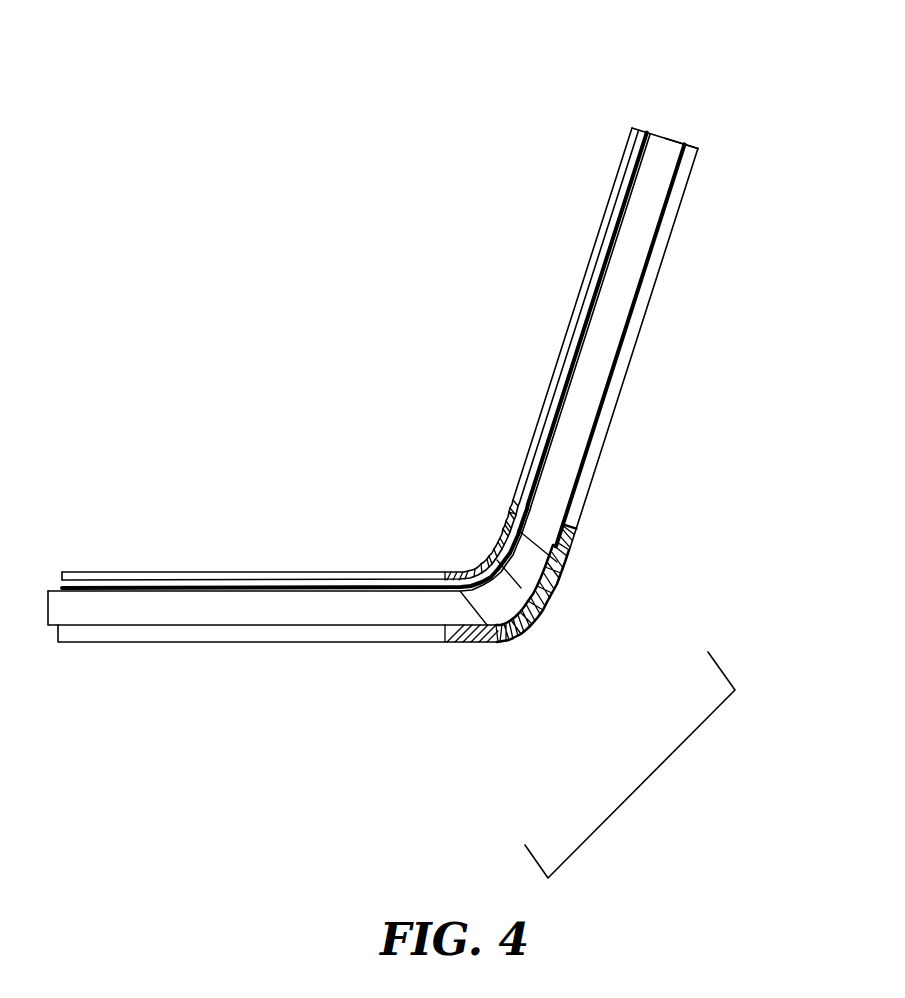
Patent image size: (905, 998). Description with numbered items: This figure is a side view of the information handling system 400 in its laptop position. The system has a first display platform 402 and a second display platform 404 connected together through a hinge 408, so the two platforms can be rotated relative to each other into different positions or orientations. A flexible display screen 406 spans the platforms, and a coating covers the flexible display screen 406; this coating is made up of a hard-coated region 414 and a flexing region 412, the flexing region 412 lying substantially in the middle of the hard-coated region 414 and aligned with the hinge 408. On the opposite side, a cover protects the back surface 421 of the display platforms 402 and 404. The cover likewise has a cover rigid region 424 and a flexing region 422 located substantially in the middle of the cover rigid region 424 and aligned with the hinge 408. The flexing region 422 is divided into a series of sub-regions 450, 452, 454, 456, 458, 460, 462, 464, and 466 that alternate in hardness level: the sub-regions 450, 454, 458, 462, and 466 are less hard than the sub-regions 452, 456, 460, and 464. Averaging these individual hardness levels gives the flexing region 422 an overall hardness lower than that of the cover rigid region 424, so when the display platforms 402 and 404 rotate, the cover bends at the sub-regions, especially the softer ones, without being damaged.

The information handling system 400 is at (727, 52).
The first display platform 402 is at (657, 130).
The back surface 421 is at (692, 134).
The second display platform 404 is at (70, 626).
The flexible display screen 406 is at (585, 312).
The hinge 408 is at (513, 594).
The flexing region 412 is at (466, 575).
The hard-coated region 414 is at (540, 391).
The cover rigid region 424 is at (630, 348).
The flexing region 422 is at (641, 798).
The sub-region 450 is at (457, 648).
The sub-region 452 is at (507, 636).
The sub-region 454 is at (522, 620).
The sub-region 456 is at (532, 613).
The sub-region 458 is at (548, 623).
The sub-region 460 is at (543, 604).
The sub-region 462 is at (555, 591).
The sub-region 464 is at (560, 572).
The sub-region 466 is at (577, 549).